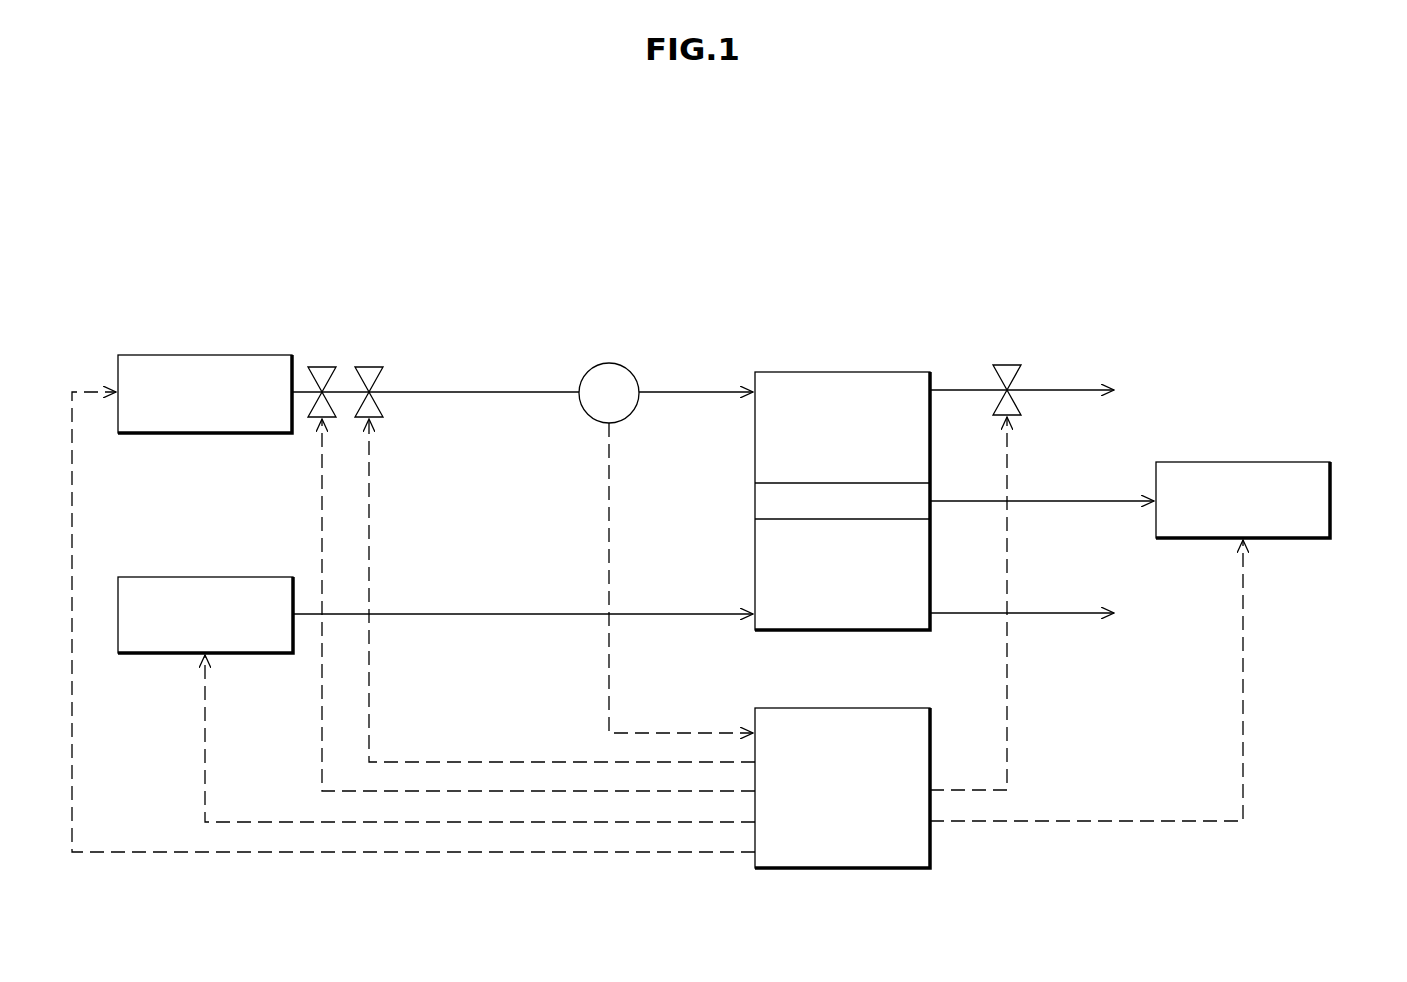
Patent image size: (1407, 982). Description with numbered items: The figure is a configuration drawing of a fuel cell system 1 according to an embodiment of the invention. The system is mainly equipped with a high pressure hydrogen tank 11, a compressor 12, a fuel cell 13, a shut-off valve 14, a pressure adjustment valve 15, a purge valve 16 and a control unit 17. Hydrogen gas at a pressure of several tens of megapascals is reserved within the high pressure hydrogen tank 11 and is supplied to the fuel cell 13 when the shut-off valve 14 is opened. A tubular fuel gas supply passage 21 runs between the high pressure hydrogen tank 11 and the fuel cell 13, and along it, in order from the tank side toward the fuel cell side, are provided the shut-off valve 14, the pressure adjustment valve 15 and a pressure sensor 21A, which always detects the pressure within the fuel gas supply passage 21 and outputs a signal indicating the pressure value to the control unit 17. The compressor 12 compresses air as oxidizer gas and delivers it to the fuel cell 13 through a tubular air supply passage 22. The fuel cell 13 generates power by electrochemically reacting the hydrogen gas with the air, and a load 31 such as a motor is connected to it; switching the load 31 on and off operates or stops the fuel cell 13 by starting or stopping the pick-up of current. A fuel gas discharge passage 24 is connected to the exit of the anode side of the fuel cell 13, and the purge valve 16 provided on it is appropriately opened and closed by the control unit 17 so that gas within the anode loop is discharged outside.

The fuel cell system 1 is at (846, 206).
The high pressure hydrogen tank 11 is at (133, 355).
The compressor 12 is at (135, 577).
The fuel cell 13 is at (847, 364).
The shut-off valve 14 is at (322, 367).
The pressure adjustment valve 15 is at (369, 367).
The purge valve 16 is at (1002, 372).
The control unit 17 is at (930, 845).
The fuel gas supply passage 21 is at (461, 392).
The pressure sensor 21A is at (614, 366).
The air supply passage 22 is at (486, 620).
The fuel gas discharge passage 24 is at (958, 388).
The load 31 is at (1330, 500).